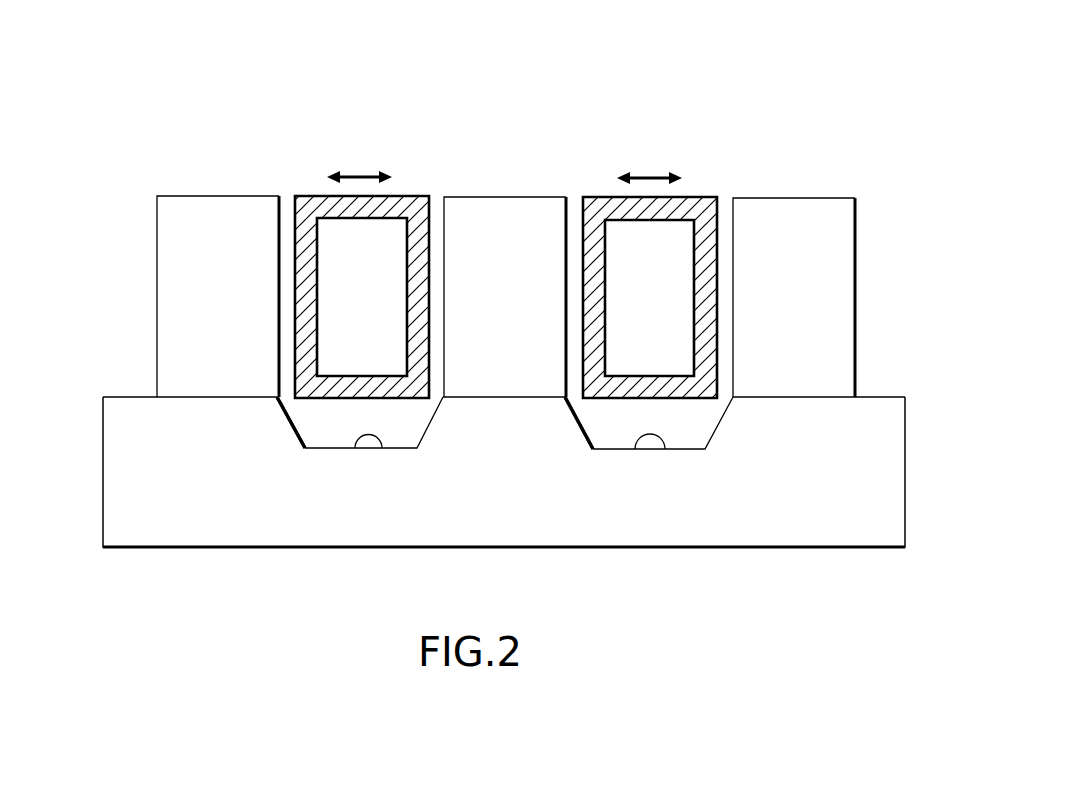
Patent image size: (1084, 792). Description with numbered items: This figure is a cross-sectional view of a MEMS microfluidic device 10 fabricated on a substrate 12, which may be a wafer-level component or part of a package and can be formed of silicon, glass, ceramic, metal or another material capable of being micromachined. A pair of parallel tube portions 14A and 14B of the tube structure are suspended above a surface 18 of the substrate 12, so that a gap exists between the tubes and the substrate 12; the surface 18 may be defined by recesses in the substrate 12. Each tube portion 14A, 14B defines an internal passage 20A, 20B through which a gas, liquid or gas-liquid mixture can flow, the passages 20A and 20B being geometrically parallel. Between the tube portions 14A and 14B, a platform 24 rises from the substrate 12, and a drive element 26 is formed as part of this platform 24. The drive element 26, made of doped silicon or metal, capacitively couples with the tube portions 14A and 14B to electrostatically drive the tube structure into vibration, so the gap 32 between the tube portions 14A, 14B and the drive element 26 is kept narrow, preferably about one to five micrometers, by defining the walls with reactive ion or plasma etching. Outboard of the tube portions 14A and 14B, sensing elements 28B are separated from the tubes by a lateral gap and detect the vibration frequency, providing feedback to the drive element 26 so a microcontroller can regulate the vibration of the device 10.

The MEMS microfluidic device 10 is at (305, 145).
The substrate 12 is at (645, 533).
The tube portion 14A is at (322, 399).
The tube portion 14B is at (700, 400).
The substrate surface 18 is at (382, 448).
The passage 20A is at (398, 312).
The passage 20B is at (685, 321).
The platform 24 is at (499, 408).
The drive element 26 is at (491, 208).
The sensing element 28B is at (205, 213).
The gap 32 is at (438, 208).